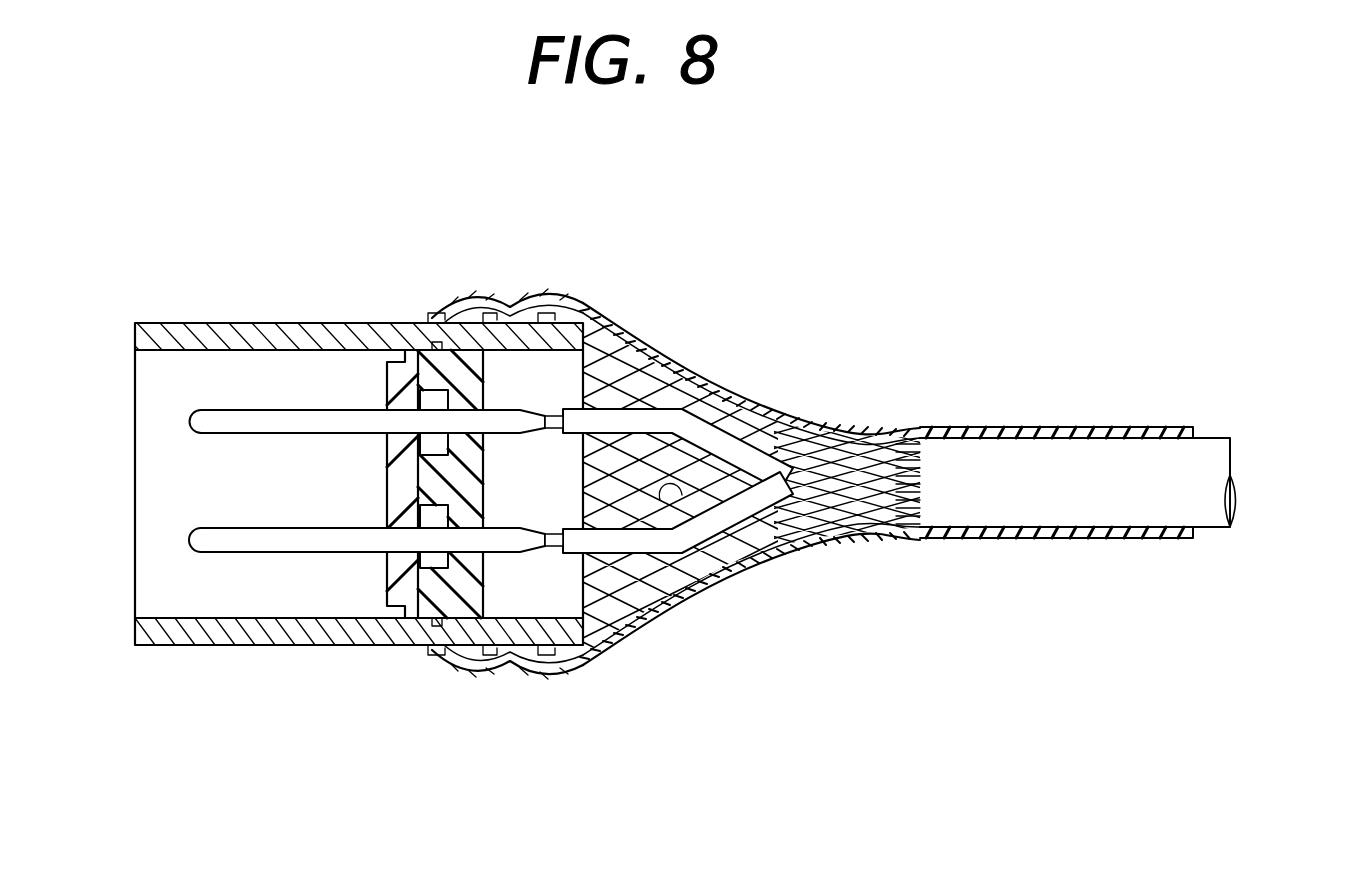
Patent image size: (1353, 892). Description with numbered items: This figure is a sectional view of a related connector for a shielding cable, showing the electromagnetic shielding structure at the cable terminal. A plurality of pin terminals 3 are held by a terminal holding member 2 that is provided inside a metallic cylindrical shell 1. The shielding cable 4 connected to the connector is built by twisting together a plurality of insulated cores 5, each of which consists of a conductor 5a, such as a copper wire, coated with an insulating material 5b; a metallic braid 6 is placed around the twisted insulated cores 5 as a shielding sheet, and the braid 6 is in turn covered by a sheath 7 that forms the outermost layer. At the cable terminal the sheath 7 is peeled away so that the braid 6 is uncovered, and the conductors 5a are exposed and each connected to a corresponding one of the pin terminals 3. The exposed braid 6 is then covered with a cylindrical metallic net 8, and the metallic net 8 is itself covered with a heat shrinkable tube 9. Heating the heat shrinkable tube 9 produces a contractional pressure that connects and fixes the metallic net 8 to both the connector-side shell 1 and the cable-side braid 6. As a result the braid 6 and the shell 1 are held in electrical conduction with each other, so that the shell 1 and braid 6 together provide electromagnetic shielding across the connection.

The metallic cylindrical shell 1 is at (267, 323).
The terminal holding member 2 is at (398, 375).
The pin terminals 3 is at (200, 536).
The shielding cable 4 is at (1235, 447).
The insulated cores 5 is at (705, 422).
The conductors 5a is at (549, 410).
The insulating materials 5b is at (645, 408).
The metallic braid 6 is at (858, 455).
The sheath 7 is at (1022, 455).
The cylindrical metallic net 8 is at (665, 498).
The heat shrinkable tube 9 is at (466, 665).